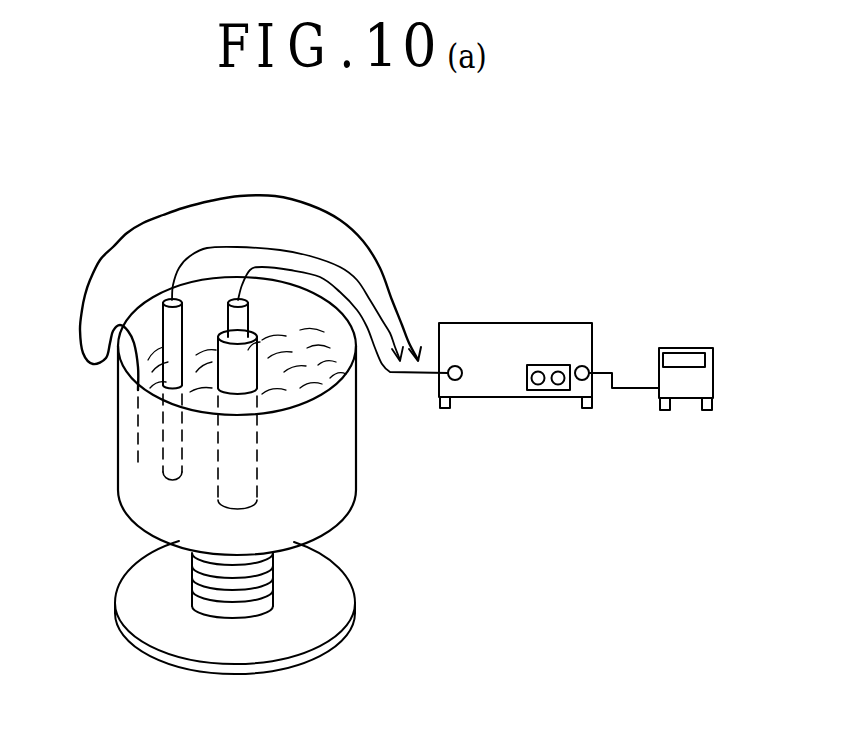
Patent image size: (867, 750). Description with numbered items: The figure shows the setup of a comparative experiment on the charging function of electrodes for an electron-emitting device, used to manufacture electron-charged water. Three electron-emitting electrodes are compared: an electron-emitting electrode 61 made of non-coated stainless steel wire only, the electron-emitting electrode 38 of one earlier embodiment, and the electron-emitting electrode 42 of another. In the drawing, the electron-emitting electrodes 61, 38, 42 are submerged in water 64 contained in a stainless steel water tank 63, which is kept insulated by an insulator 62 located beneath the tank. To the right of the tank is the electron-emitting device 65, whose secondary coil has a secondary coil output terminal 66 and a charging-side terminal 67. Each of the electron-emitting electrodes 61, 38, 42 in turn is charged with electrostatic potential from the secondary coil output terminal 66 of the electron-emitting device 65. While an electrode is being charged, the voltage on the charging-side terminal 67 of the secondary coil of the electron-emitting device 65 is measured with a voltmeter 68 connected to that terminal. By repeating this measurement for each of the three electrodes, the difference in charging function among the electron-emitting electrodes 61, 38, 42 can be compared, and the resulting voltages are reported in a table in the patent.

The electron-emitting electrode 38 is at (187, 308).
The electron-emitting electrode 42 is at (301, 360).
The electron-emitting electrode 61 is at (137, 328).
The insulator 62 is at (273, 582).
The stainless steel water tank 63 is at (357, 470).
The water 64 is at (257, 354).
The electron-emitting device 65 is at (544, 323).
The secondary coil output terminal 66 is at (458, 380).
The charging-side terminal 67 is at (581, 380).
The voltmeter 68 is at (683, 392).